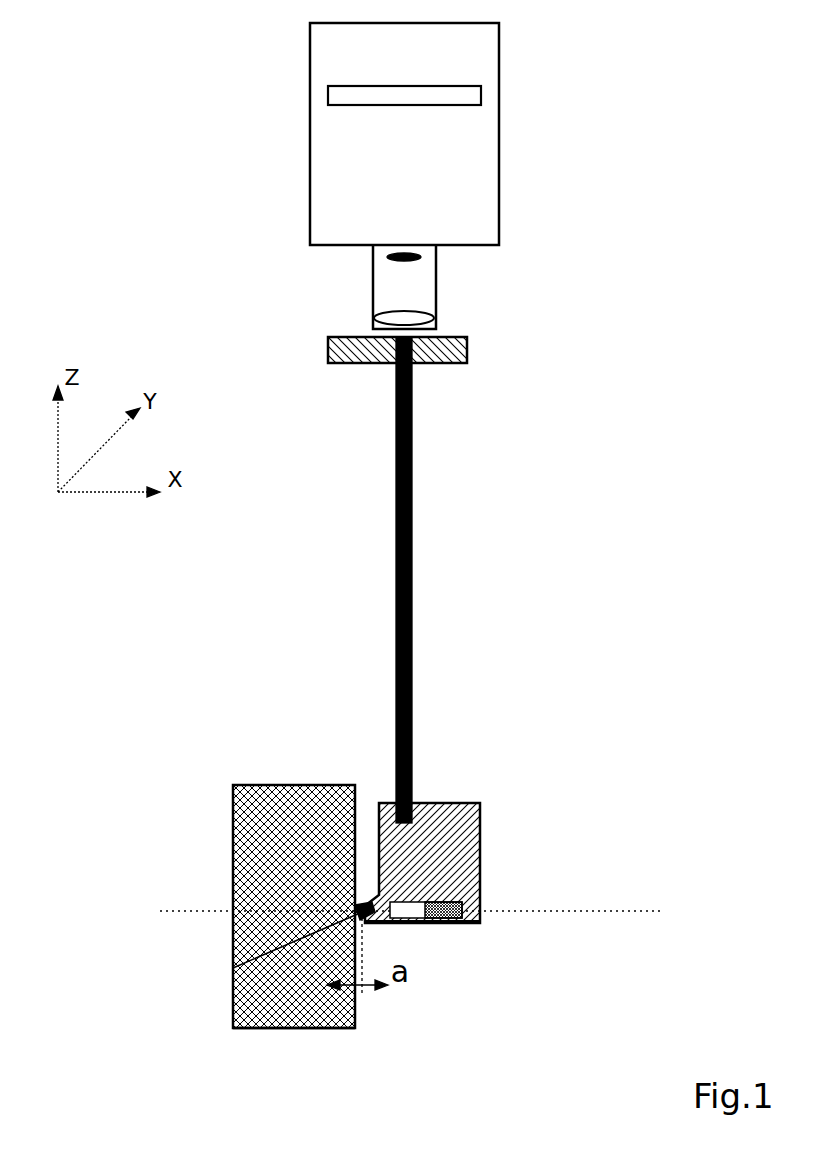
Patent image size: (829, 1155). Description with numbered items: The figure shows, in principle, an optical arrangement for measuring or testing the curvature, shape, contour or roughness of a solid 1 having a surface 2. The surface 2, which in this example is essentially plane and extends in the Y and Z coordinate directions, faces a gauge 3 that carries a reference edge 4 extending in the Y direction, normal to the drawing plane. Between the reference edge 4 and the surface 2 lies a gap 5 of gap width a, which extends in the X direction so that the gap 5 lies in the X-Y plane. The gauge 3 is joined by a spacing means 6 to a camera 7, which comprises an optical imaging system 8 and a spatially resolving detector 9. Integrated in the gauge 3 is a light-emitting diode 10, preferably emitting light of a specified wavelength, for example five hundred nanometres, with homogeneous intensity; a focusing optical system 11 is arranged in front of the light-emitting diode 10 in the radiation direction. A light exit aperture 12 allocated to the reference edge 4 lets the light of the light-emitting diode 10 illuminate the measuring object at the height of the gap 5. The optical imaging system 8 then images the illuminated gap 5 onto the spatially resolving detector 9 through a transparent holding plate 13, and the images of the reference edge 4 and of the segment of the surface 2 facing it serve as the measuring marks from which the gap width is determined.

The solid 1 is at (232, 798).
The surface 2 is at (353, 1007).
The gauge 3 is at (482, 818).
The reference edge 4 is at (373, 900).
The gap 5 is at (233, 968).
The spacing means 6 is at (412, 555).
The camera 7 is at (485, 193).
The optical imaging system 8 is at (420, 257).
The spatially resolving detector 9 is at (473, 97).
The light-emitting diode 10 is at (482, 885).
The focusing optical system 11 is at (413, 902).
The light exit aperture 12 is at (390, 927).
The transparent holding plate 13 is at (466, 362).